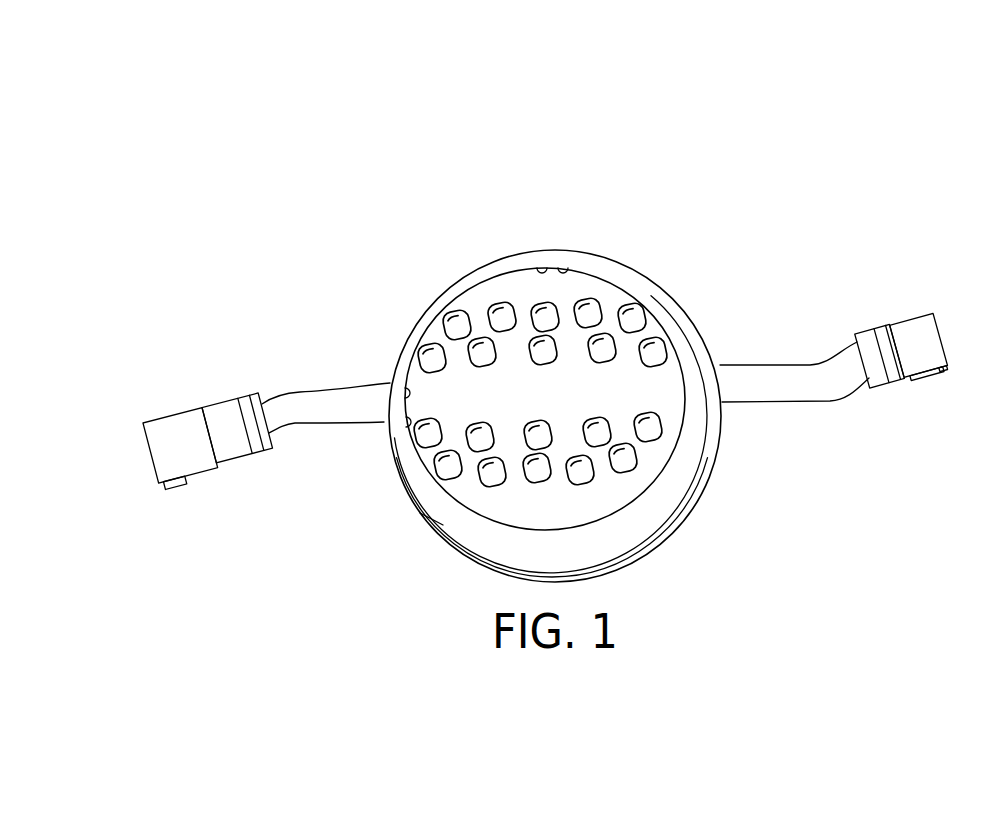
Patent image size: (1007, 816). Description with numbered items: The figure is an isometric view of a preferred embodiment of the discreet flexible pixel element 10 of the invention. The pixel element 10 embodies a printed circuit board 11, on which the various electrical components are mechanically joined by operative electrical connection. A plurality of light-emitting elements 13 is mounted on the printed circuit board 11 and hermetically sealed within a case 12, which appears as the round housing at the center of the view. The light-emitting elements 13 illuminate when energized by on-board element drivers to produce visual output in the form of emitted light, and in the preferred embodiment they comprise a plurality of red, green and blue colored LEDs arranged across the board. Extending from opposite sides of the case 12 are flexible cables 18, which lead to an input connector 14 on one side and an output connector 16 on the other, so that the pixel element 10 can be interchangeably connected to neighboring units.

The discreet flexible pixel element 10 is at (414, 140).
The printed circuit board 11 is at (660, 380).
The case 12 is at (593, 258).
The light-emitting elements 13 is at (425, 352).
The input connector 14 is at (172, 423).
The output connector 16 is at (923, 325).
The flexible cables 18 is at (338, 413).